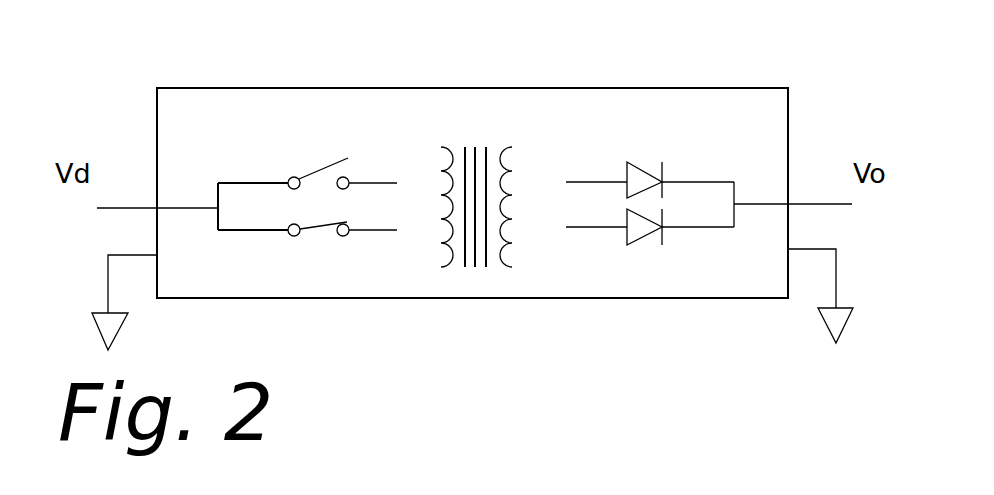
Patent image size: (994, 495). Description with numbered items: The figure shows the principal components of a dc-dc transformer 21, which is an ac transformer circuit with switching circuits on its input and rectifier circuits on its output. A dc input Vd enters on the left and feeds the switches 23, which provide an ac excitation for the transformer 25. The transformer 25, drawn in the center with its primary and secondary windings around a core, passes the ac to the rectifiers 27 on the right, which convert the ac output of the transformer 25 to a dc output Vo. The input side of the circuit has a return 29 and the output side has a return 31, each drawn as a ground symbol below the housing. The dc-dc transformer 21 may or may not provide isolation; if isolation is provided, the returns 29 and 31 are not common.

The dc-dc transformer 21 is at (177, 35).
The switches 23 is at (322, 148).
The transformer 25 is at (493, 115).
The rectifiers 27 is at (643, 143).
The return 29 is at (100, 288).
The return 31 is at (850, 293).